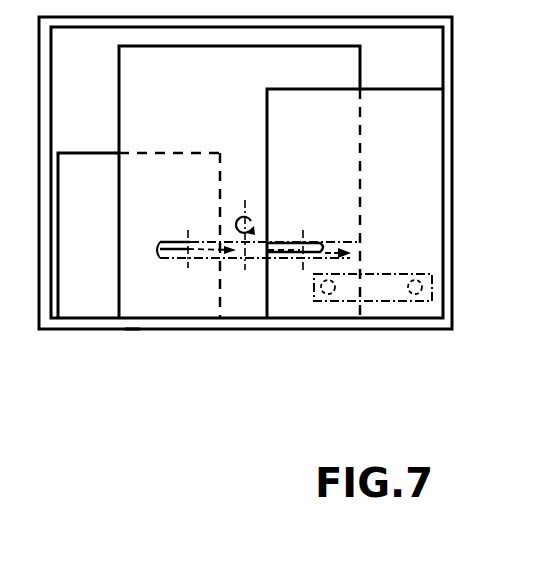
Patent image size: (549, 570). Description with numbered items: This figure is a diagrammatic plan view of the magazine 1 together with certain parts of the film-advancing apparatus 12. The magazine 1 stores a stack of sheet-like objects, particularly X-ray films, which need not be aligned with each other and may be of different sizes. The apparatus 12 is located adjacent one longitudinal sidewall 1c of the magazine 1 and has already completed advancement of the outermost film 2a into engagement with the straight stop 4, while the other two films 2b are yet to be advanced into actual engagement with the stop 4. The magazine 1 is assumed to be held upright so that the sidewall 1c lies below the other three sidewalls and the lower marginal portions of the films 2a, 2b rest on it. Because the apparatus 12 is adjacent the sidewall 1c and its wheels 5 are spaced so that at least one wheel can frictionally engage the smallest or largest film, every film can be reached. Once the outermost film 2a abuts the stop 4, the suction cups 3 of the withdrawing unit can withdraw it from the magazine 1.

The magazine 1 is at (452, 221).
The longitudinal sidewall 1c is at (134, 330).
The outermost film 2a is at (372, 99).
The sheet-like objects 2b is at (131, 135).
The suction cups 3 is at (364, 274).
The stop 4 is at (443, 112).
The wheels 5 is at (160, 258).
The apparatus 12 is at (345, 231).